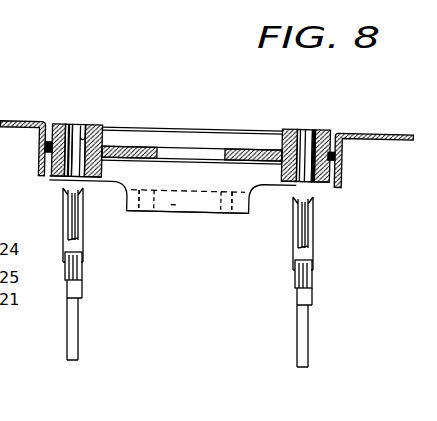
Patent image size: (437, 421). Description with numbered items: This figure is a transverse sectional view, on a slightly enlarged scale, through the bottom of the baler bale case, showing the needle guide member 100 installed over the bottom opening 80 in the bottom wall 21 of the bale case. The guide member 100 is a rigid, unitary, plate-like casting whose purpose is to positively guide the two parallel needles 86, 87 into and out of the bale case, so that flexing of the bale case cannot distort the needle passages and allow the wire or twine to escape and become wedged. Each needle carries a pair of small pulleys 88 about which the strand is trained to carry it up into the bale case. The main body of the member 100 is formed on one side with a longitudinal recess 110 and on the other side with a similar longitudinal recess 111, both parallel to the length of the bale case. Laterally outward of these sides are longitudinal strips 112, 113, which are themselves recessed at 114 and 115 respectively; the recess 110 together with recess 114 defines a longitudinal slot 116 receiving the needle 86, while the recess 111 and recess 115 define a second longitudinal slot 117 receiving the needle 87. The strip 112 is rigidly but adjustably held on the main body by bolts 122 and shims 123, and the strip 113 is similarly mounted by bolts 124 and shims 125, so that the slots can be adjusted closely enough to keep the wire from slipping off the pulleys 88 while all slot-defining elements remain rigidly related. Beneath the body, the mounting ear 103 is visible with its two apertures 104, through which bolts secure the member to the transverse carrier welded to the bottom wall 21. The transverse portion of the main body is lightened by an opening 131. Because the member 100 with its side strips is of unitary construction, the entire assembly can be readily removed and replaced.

The bottom wall 21 is at (18, 122).
The bottom opening 80 is at (47, 149).
The bolts 122 is at (45, 153).
The longitudinal strip 112 is at (58, 125).
The longitudinal slot 116 is at (73, 126).
The shims 123 is at (70, 125).
The longitudinal recess 110 is at (81, 128).
The opening 131 is at (172, 146).
The needle guide member 100 is at (236, 140).
The longitudinal recess 114 is at (67, 178).
The apertures 104 is at (148, 212).
The mounting ear 103 is at (193, 214).
The longitudinal recess 111 is at (303, 130).
The longitudinal slot 117 is at (310, 132).
The shims 125 is at (318, 132).
The longitudinal strip 113 is at (326, 132).
The bolts 124 is at (336, 156).
The longitudinal recess 115 is at (308, 181).
The needle 86 is at (68, 358).
The needle 87 is at (302, 360).
The small pulleys 88 is at (74, 254).